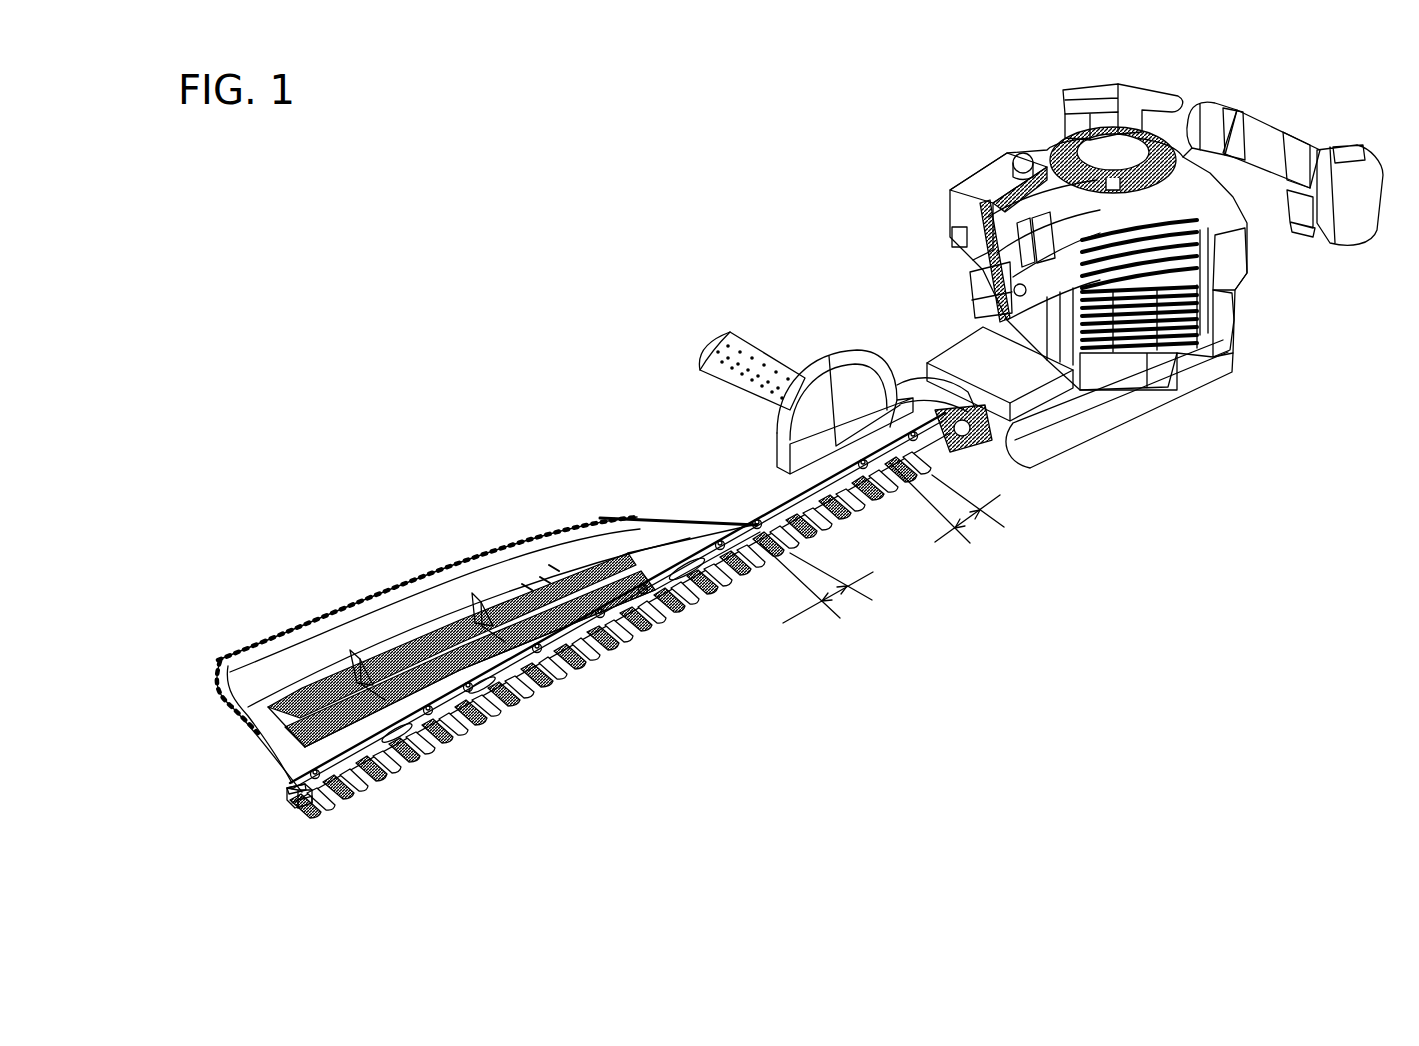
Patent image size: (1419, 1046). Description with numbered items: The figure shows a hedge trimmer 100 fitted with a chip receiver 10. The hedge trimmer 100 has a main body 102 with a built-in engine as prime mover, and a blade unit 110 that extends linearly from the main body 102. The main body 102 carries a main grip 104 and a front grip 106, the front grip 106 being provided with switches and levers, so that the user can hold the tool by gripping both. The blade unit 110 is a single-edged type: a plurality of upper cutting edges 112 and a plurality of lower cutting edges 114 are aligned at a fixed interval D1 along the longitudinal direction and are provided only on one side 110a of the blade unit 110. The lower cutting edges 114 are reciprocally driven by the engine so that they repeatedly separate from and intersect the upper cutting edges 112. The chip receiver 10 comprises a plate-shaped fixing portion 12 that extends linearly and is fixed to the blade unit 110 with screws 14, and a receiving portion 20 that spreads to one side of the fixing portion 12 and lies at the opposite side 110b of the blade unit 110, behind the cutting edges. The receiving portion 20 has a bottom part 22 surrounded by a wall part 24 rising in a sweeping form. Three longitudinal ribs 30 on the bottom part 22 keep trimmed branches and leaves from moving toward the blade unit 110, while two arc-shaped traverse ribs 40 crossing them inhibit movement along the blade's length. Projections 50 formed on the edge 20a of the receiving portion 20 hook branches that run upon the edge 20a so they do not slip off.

The chip receiver 10 is at (244, 643).
The fixing portion 12 is at (707, 557).
The screws 14 is at (683, 606).
The receiving portion 20 is at (629, 477).
The edge of the receiving portion 20a is at (657, 517).
The bottom part 22 is at (639, 555).
The wall part 24 is at (569, 544).
The longitudinal ribs 30 is at (553, 566).
The traverse ribs 40 is at (357, 677).
The projections 50 is at (375, 588).
The hedge trimmer 100 is at (1228, 375).
The main body 102 is at (1234, 318).
The main grip 104 is at (1273, 124).
The front grip 106 is at (781, 330).
The blade unit 110 is at (286, 797).
The one side of the blade unit 110a is at (312, 808).
The opposite side of the blade unit 110b is at (283, 789).
The upper cutting edges 112 is at (550, 688).
The lower cutting edges 114 is at (583, 663).
The fixed interval D1 is at (907, 575).